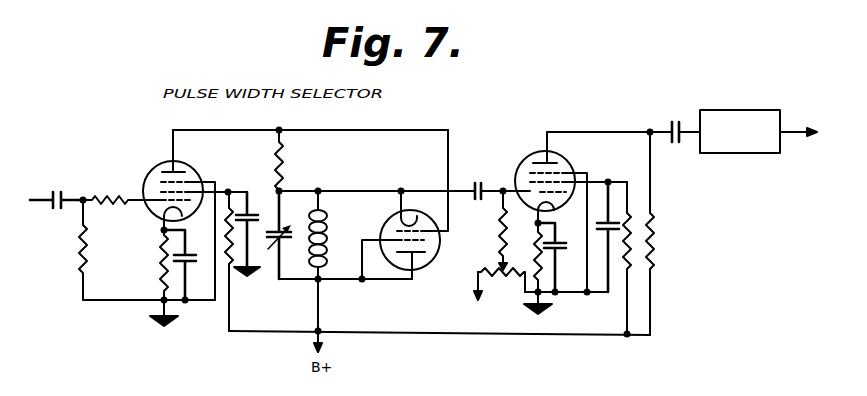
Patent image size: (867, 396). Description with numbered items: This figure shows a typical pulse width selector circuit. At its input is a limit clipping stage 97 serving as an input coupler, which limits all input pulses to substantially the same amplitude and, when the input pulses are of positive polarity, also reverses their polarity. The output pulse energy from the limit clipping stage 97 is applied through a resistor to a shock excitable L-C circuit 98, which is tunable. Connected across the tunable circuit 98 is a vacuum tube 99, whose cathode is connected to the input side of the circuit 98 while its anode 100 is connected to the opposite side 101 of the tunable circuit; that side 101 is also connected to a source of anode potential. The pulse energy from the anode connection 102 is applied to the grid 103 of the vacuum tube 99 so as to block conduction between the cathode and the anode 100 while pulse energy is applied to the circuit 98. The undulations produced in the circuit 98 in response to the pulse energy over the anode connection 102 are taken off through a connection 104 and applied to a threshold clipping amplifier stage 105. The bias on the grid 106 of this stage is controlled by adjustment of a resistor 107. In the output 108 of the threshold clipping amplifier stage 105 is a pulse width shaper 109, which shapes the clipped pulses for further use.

The limit clipping stage 97 is at (147, 170).
The shock excitable L-C circuit 98 is at (297, 282).
The vacuum tube 99 is at (403, 207).
The anode 100 is at (419, 256).
The opposite side of the tunable circuit 101 is at (322, 283).
The anode connection 102 is at (241, 131).
The grid 103 is at (385, 231).
The connection 104 is at (463, 189).
The threshold clipping amplifier stage 105 is at (531, 148).
The grid 106 is at (540, 192).
The resistor 107 is at (496, 280).
The output 108 is at (660, 131).
The pulse width shaper 109 is at (722, 110).